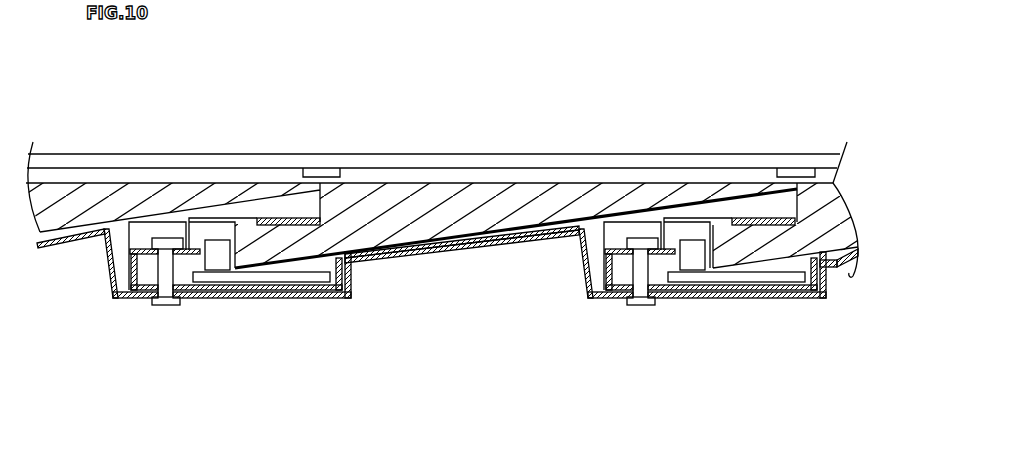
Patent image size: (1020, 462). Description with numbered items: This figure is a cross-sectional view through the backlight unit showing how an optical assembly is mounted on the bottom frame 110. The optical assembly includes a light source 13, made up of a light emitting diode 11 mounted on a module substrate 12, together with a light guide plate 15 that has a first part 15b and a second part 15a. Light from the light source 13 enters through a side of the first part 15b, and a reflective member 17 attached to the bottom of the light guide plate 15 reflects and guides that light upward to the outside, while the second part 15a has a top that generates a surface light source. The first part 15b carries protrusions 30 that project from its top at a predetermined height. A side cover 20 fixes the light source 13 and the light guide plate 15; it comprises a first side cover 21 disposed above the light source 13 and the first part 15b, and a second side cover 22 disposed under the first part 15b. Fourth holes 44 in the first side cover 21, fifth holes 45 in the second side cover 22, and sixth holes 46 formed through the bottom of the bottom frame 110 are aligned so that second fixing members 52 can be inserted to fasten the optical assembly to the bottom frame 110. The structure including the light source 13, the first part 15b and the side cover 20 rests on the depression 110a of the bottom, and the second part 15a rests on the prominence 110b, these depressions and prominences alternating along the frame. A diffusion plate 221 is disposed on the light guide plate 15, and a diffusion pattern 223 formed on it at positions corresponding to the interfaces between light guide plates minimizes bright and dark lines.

The light emitting diode 11 is at (216, 265).
The module substrate 12 is at (252, 277).
The light source 13 is at (261, 332).
The light guide plate 15 is at (442, 178).
The second part 15a is at (372, 192).
The first part 15b is at (288, 222).
The reflective member 17 is at (545, 235).
The side cover 20 is at (201, 292).
The first side cover 21 is at (113, 265).
The second side cover 22 is at (130, 283).
The protrusion 30 is at (245, 220).
The fourth hole 44 is at (138, 232).
The fifth hole 45 is at (192, 297).
The sixth hole 46 is at (148, 300).
The second fixing member 52 is at (167, 243).
The bottom frame 110 is at (308, 293).
The depression 110a is at (277, 300).
The prominence 110b is at (463, 250).
The diffusion plate 221 is at (682, 160).
The diffusion pattern 223 is at (795, 172).